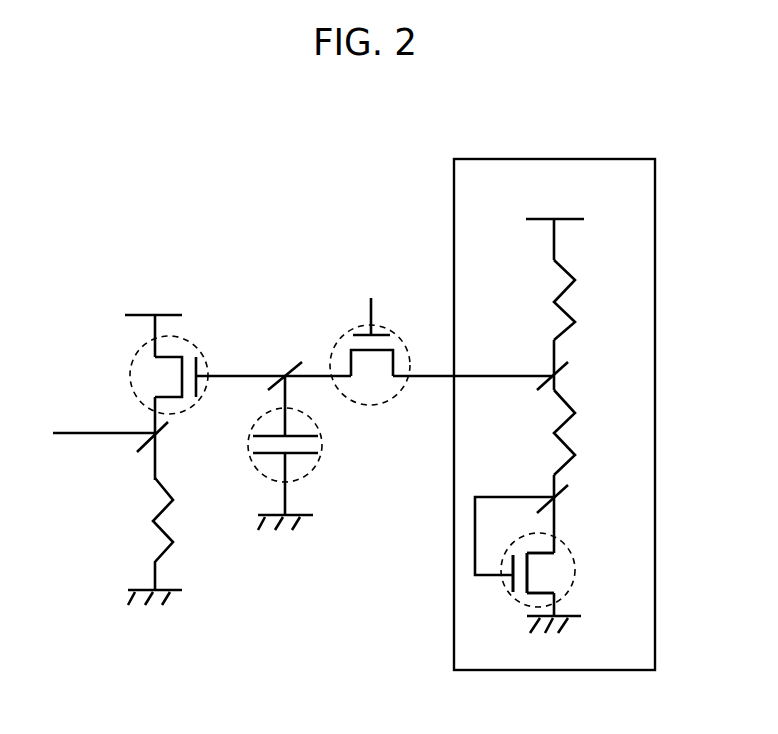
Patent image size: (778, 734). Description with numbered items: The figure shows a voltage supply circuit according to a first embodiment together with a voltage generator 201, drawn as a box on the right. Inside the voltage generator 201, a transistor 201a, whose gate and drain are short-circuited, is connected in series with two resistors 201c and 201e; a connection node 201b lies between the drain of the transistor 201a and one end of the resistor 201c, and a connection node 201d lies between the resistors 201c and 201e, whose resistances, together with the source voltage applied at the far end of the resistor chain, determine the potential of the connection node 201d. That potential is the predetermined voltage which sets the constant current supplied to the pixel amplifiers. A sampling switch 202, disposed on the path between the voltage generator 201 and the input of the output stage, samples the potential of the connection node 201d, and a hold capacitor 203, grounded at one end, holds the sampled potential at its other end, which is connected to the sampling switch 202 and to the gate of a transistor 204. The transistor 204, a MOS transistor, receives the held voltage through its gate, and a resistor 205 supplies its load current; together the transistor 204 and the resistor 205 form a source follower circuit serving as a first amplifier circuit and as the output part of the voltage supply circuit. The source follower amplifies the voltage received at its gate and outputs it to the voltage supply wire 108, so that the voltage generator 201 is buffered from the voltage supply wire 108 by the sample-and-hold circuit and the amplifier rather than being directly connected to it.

The voltage supply wire 108 is at (78, 434).
The voltage generator 201 is at (655, 206).
The transistor 201a is at (577, 561).
The connection node 201b is at (570, 487).
The resistor 201c is at (575, 430).
The connection node 201d is at (568, 363).
The resistor 201e is at (567, 308).
The sampling switch 202 is at (342, 341).
The hold capacitor 203 is at (320, 453).
The transistor 204 is at (132, 358).
The resistor 205 is at (156, 538).